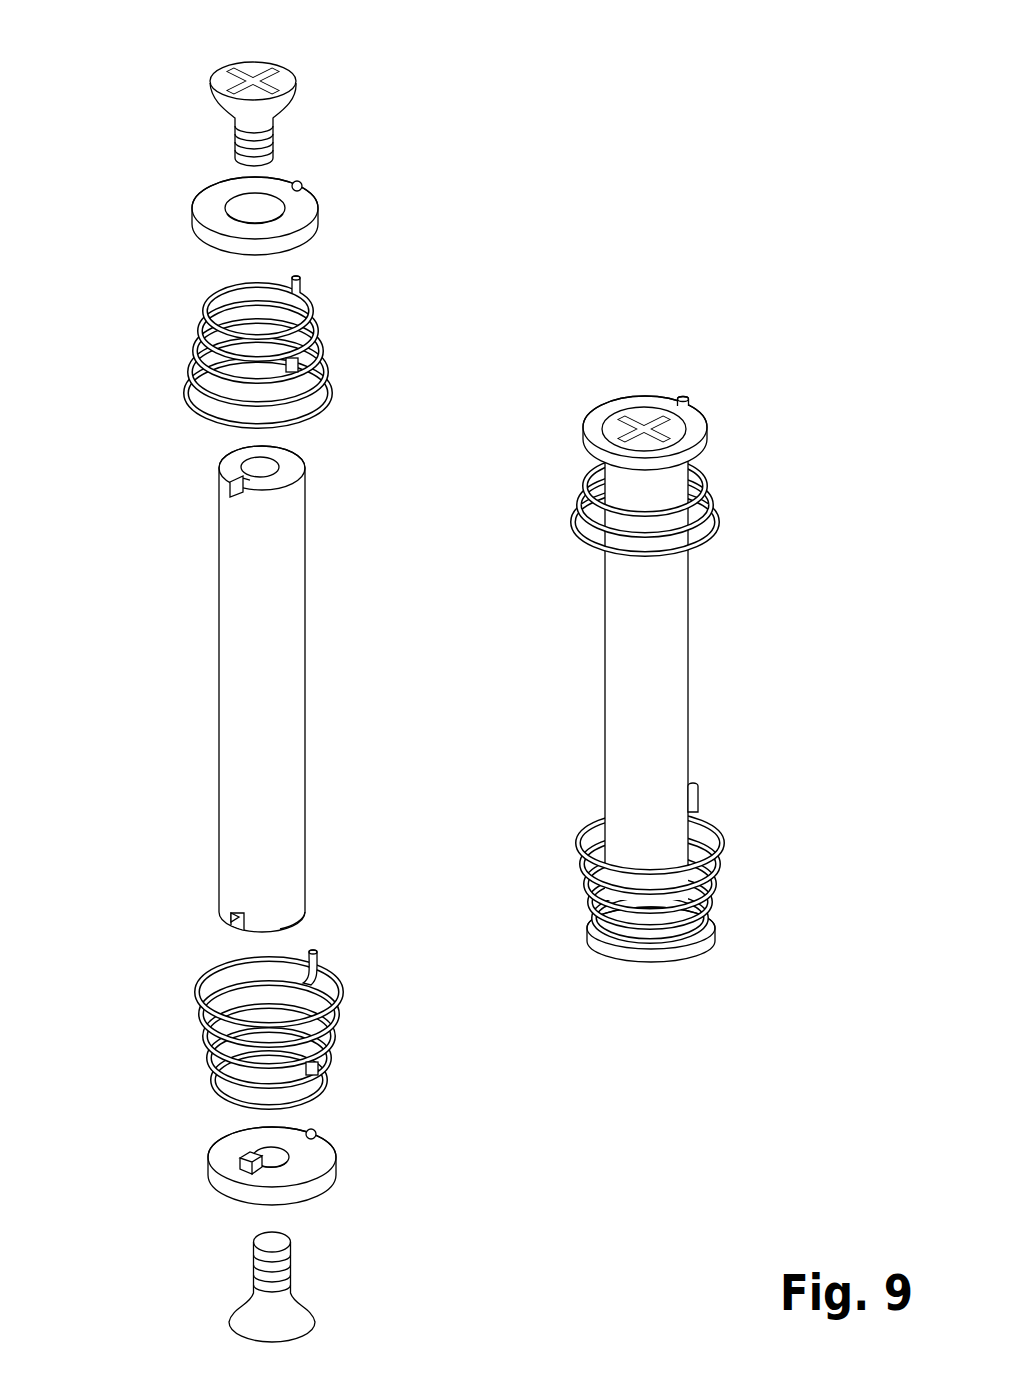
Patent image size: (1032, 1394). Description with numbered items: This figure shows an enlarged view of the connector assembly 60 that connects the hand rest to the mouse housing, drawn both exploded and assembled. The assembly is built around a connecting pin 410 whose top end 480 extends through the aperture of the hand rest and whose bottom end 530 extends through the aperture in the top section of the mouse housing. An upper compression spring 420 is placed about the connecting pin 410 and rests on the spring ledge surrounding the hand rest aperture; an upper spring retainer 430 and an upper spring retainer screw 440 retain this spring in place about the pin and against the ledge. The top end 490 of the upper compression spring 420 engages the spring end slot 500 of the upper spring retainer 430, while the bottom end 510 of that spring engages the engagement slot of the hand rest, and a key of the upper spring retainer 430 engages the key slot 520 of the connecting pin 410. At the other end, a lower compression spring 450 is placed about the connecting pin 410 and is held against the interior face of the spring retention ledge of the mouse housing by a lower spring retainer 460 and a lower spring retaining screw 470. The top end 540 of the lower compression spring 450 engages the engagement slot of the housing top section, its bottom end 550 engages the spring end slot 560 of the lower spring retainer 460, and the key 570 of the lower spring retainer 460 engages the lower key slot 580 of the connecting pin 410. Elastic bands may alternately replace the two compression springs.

The connector assembly 60 is at (716, 383).
The connecting pin 410 is at (285, 698).
The upper compression spring 420 is at (315, 333).
The upper spring retainer 430 is at (302, 210).
The upper spring retainer screw 440 is at (280, 80).
The lower compression spring 450 is at (333, 1027).
The lower spring retainer 460 is at (313, 1167).
The lower spring retaining screw 470 is at (288, 1318).
The top end of the connecting pin 480 is at (287, 472).
The top end of the upper compression spring 490 is at (297, 277).
The spring end slot 500 is at (300, 188).
The bottom end of the upper compression spring 510 is at (296, 365).
The key slot 520 is at (232, 484).
The bottom end of the connecting pin 530 is at (290, 912).
The top end of the lower compression spring 540 is at (318, 958).
The bottom end of the lower compression spring 550 is at (317, 1068).
The spring end slot 560 is at (314, 1135).
The key 570 is at (242, 1162).
The lower key slot 580 is at (229, 917).